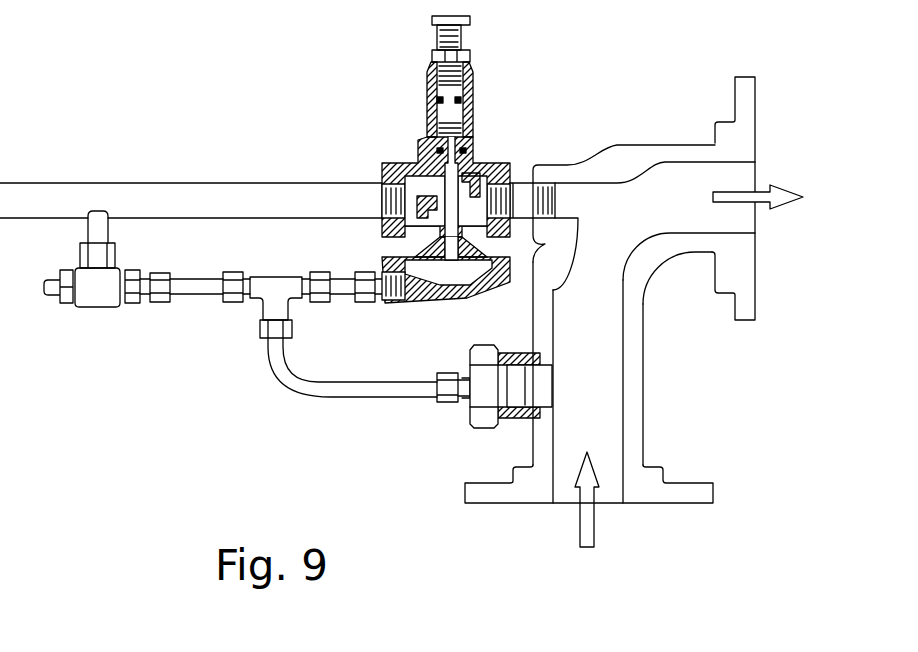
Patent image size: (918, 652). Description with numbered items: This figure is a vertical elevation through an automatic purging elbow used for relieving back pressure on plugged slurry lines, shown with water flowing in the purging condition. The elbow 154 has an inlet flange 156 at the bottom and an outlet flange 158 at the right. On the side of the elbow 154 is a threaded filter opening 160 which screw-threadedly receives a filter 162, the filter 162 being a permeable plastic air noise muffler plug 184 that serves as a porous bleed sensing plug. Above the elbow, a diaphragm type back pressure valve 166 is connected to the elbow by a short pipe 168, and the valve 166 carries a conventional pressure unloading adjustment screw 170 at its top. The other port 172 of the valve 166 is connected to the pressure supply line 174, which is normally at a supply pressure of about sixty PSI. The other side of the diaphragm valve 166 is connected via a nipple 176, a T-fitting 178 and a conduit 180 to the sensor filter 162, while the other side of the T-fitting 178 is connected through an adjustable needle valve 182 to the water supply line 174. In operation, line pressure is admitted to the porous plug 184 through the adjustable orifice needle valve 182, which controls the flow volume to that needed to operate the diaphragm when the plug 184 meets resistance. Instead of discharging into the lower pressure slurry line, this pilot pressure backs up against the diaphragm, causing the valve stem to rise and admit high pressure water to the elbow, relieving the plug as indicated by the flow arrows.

The elbow 154 is at (641, 391).
The inlet flange 156 is at (666, 497).
The outlet flange 158 is at (748, 98).
The threaded filter opening 160 is at (539, 360).
The filter 162 is at (483, 352).
The diaphragm type back pressure valve 166 is at (427, 100).
The short pipe 168 is at (518, 187).
The pressure unloading adjustment screw 170 is at (437, 33).
The port 172 is at (380, 182).
The pressure supply line 174 is at (177, 190).
The nipple 176 is at (383, 305).
The T-fitting 178 is at (277, 280).
The conduit 180 is at (322, 392).
The adjustable needle valve 182 is at (80, 250).
The permeable plastic air noise muffler plug 184 is at (543, 385).